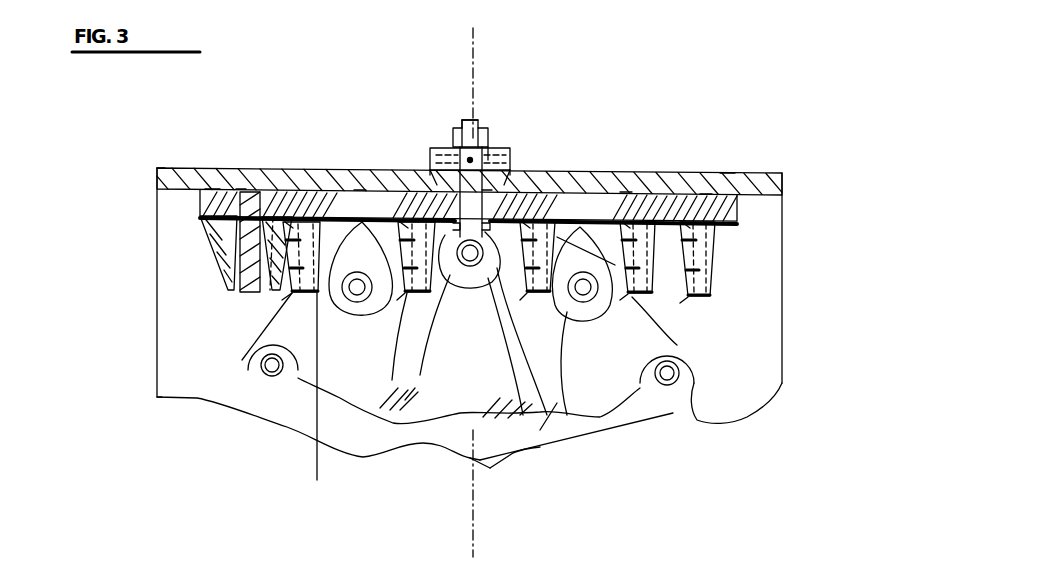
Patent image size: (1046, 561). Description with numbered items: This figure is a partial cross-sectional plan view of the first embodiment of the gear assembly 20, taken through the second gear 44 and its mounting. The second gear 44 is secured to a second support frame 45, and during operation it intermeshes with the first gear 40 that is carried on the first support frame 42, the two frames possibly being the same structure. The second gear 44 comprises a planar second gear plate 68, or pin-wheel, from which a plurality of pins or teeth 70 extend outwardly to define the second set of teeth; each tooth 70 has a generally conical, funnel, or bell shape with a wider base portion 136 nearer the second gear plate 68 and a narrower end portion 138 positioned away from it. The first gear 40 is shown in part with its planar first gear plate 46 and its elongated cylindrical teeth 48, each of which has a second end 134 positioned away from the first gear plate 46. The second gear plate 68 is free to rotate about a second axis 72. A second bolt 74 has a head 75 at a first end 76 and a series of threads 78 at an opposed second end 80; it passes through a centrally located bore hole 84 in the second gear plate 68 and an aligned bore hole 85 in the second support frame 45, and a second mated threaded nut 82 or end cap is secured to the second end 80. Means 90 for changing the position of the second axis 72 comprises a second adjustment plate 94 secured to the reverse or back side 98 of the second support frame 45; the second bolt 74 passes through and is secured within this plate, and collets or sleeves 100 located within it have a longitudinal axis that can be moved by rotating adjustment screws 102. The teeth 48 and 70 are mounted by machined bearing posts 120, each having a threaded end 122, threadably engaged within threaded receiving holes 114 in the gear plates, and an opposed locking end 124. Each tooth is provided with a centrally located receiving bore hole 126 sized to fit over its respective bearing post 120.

The assembly 20 is at (225, 418).
The first gear 40 is at (360, 407).
The first support frame 42 is at (613, 423).
The second gear 44 is at (193, 203).
The second support frame 45 is at (148, 166).
The first gear plate 46 is at (557, 403).
The teeth 48 is at (288, 372).
The second gear plate 68 is at (727, 173).
The teeth 70 is at (248, 293).
The second axis 72 is at (477, 40).
The second bolt 74 is at (513, 453).
The head 75 is at (510, 458).
The first end 76 is at (505, 462).
The threads 78 is at (477, 120).
The second end 80 is at (468, 118).
The second nut 82 is at (490, 133).
The bore hole 84 is at (498, 178).
The bore hole 85 is at (437, 173).
The means for changing position of second axis 90 is at (435, 165).
The second adjustment plate 94 is at (528, 163).
The back side 98 is at (212, 187).
The collets 100 is at (447, 143).
The adjustment screws 102 is at (513, 167).
The receiving holes 114 is at (242, 188).
The bearing posts 120 is at (230, 277).
The threaded end 122 is at (208, 187).
The locking end 124 is at (247, 317).
The receiving bore hole 126 is at (237, 258).
The second end 134 is at (246, 355).
The base portion 136 is at (197, 220).
The end portion 138 is at (240, 292).